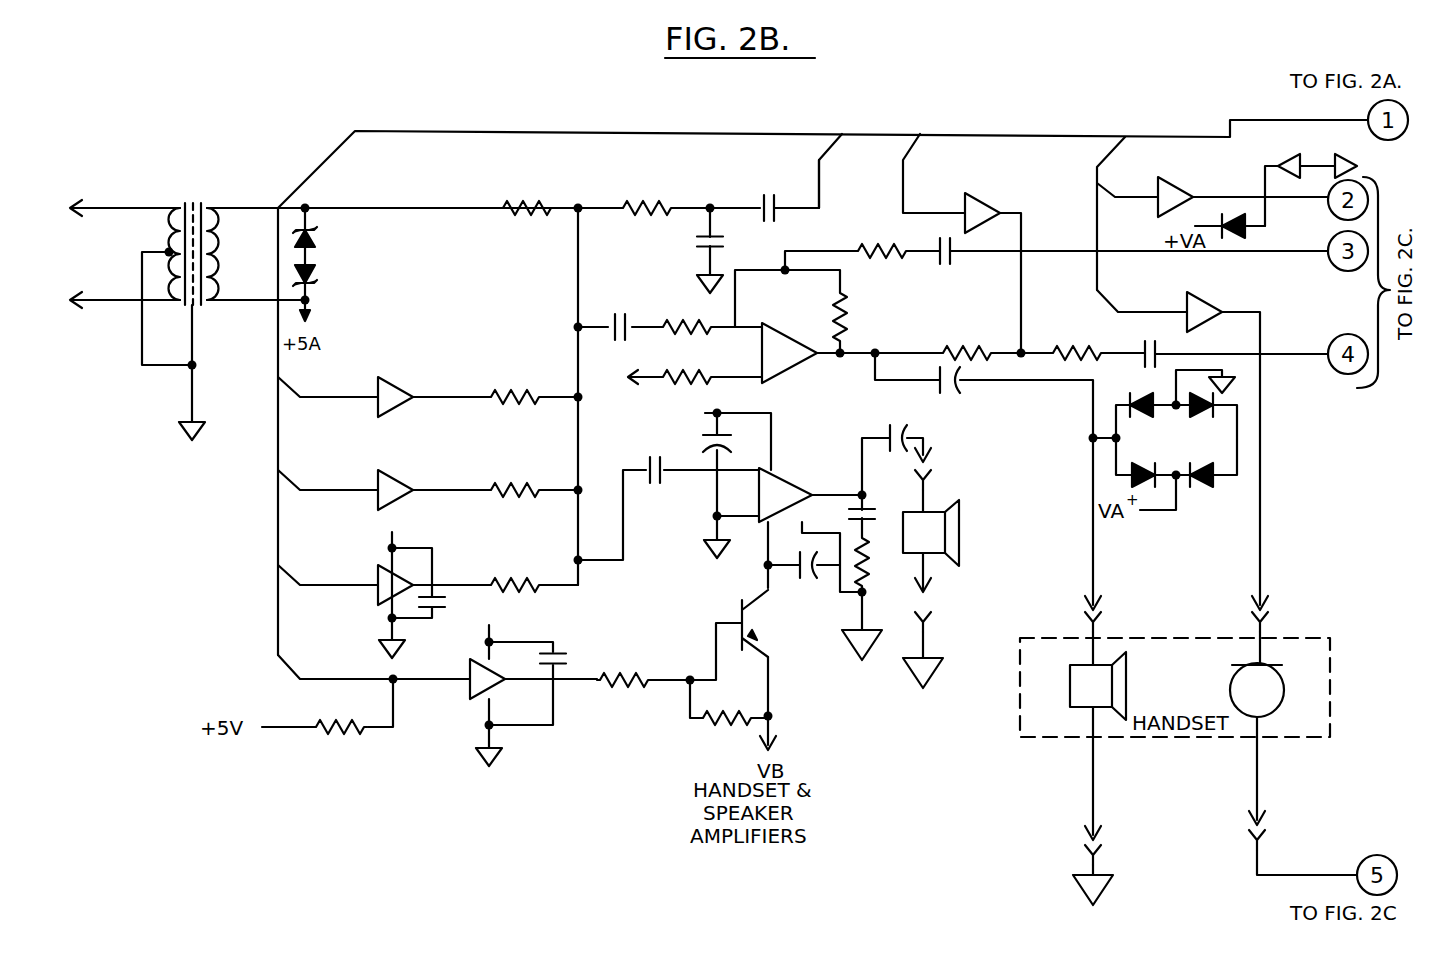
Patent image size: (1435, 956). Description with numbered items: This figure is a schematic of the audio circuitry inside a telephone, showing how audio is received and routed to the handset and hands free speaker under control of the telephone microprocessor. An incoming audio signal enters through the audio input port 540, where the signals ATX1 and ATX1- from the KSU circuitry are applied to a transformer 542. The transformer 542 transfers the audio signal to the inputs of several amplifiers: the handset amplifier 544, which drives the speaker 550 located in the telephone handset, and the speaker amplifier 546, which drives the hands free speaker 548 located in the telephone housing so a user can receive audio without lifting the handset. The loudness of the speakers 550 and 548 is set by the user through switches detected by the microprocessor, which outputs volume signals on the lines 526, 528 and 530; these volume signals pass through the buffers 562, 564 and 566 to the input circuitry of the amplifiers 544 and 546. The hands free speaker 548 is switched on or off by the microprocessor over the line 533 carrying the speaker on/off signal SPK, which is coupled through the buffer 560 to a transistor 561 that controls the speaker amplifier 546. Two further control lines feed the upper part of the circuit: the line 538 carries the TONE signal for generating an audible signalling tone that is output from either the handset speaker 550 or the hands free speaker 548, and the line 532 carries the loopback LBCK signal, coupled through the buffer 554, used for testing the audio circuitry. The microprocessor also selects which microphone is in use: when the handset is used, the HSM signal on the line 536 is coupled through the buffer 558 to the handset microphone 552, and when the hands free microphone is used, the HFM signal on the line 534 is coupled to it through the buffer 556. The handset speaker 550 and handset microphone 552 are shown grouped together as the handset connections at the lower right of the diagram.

The audio input port 540 is at (85, 235).
The transformer 542 is at (208, 205).
The line 538 is at (833, 143).
The line 532 is at (912, 143).
The buffer 554 is at (983, 203).
The line 534 is at (1127, 200).
The buffer 556 is at (1180, 186).
The line 536 is at (1097, 270).
The buffer 558 is at (1207, 302).
The handset amplifier 544 is at (805, 313).
The line 526 is at (302, 400).
The buffer 562 is at (398, 387).
The line 528 is at (312, 493).
The buffer 564 is at (400, 480).
The line 530 is at (303, 598).
The buffer 566 is at (376, 596).
The line 533 is at (302, 682).
The buffer 560 is at (470, 690).
The speaker amplifier 546 is at (812, 465).
The hands free speaker 548 is at (933, 508).
The transistor 561 is at (757, 623).
The speaker 550 is at (1070, 680).
The handset microphone 552 is at (1282, 688).